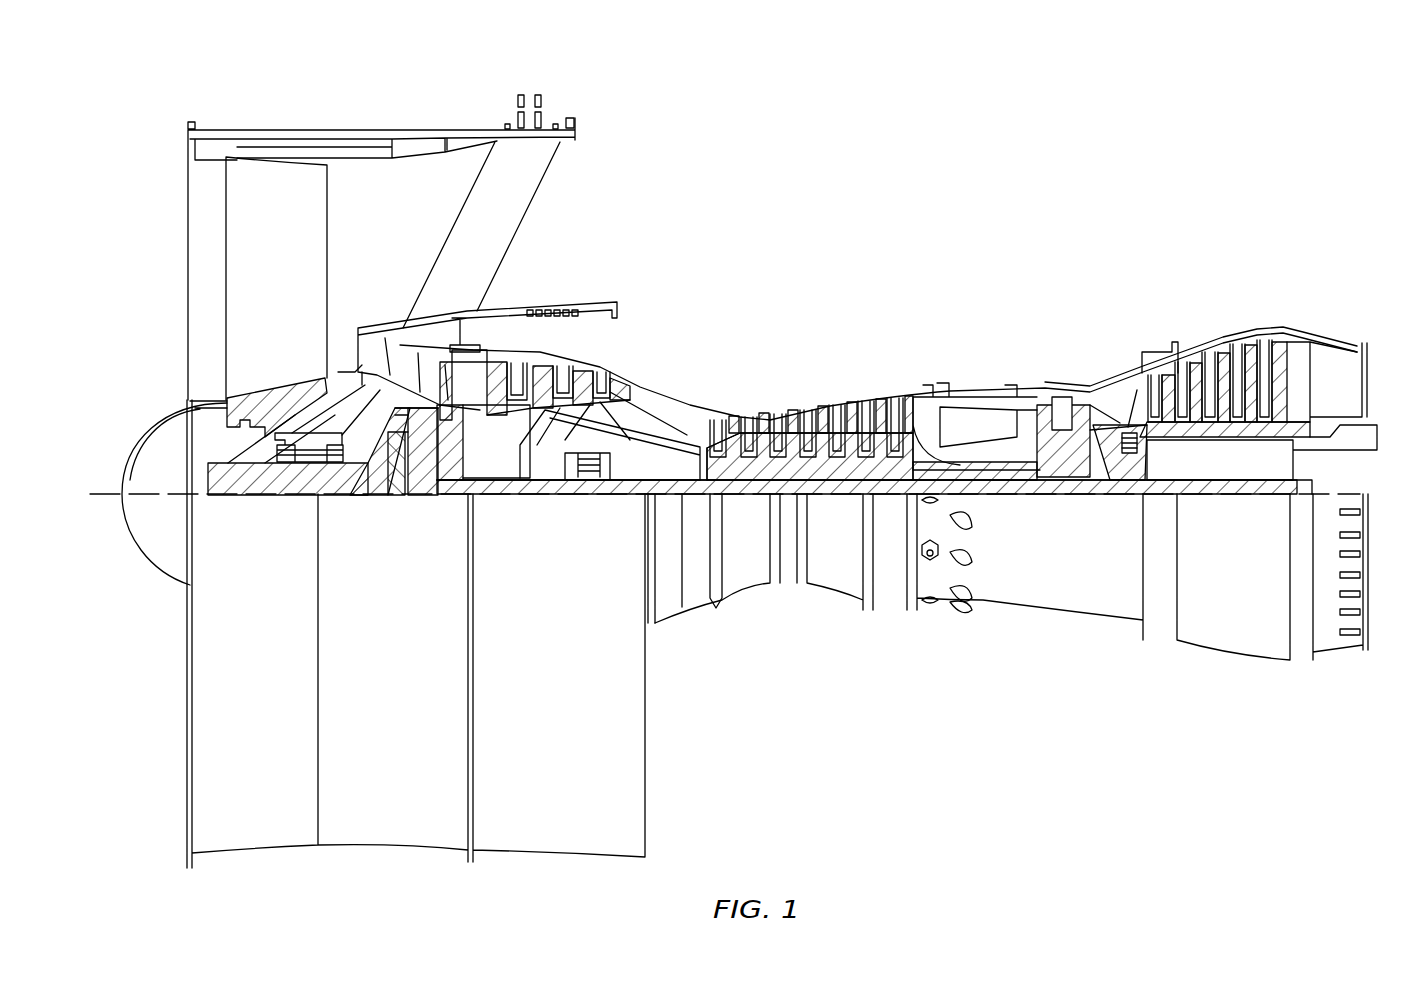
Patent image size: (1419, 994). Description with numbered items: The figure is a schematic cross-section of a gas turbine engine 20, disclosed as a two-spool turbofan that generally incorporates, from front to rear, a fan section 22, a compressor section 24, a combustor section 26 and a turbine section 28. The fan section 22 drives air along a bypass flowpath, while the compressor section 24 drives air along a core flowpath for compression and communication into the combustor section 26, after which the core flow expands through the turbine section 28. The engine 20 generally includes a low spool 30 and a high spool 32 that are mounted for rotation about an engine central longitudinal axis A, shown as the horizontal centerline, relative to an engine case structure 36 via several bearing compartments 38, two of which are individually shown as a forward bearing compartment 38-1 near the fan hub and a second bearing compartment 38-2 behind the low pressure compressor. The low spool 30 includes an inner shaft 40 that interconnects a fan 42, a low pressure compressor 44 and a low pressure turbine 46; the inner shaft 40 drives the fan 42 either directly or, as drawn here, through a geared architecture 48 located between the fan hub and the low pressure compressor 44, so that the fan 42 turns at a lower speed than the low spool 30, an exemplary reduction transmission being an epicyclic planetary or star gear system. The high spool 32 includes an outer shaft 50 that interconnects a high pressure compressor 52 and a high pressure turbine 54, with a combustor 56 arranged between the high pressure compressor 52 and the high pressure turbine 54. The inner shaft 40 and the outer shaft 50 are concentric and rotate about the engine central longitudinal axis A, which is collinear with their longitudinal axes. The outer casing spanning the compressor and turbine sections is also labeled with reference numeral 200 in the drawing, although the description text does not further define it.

The gas turbine engine 20 is at (1106, 190).
The fan section 22 is at (465, 77).
The compressor section 24 is at (480, 261).
The combustor section 26 is at (1045, 261).
The turbine section 28 is at (1300, 261).
The low spool 30 is at (846, 534).
The high spool 32 is at (878, 440).
The engine case structure 36 is at (178, 824).
The bearing compartments 38 is at (1120, 485).
The bearing compartment 38-1 is at (280, 490).
The bearing compartment 38-2 is at (592, 482).
The inner shaft 40 is at (670, 500).
The fan 42 is at (285, 279).
The low pressure compressor 44 is at (565, 372).
The low pressure turbine 46 is at (1218, 362).
The geared architecture 48 is at (412, 508).
The outer shaft 50 is at (1000, 472).
The high pressure compressor 52 is at (835, 410).
The high pressure turbine 54 is at (1035, 395).
The combustor 56 is at (985, 415).
The engine static structure / casing 200 is at (647, 403).
The engine central longitudinal axis A is at (103, 490).